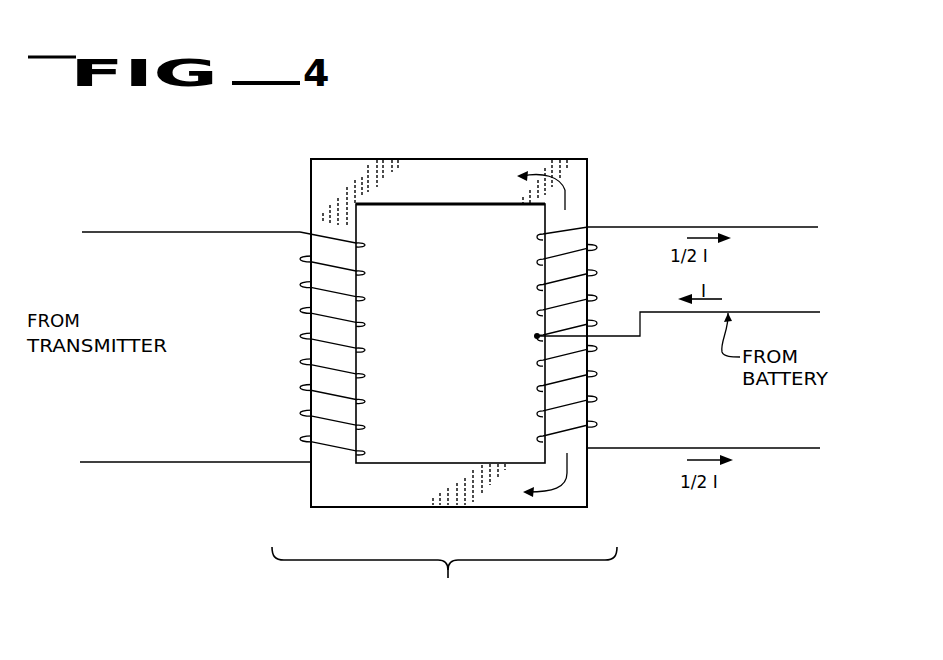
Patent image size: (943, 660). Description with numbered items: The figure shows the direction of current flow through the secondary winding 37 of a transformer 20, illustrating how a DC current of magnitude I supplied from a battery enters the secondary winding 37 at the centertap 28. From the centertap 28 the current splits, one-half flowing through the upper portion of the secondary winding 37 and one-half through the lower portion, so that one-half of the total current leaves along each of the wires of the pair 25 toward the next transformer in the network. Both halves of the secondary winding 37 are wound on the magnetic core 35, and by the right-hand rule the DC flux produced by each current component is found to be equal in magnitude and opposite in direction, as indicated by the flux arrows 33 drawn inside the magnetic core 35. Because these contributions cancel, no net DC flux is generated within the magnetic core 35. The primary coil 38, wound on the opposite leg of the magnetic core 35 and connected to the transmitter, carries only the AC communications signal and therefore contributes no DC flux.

The transformer 20 is at (444, 575).
The pair of wires 25 is at (787, 226).
The centertap 28 is at (536, 336).
The flux arrows 33 is at (565, 190).
The magnetic core 35 is at (463, 166).
The secondary winding 37 is at (538, 284).
The primary coil 38 is at (370, 297).